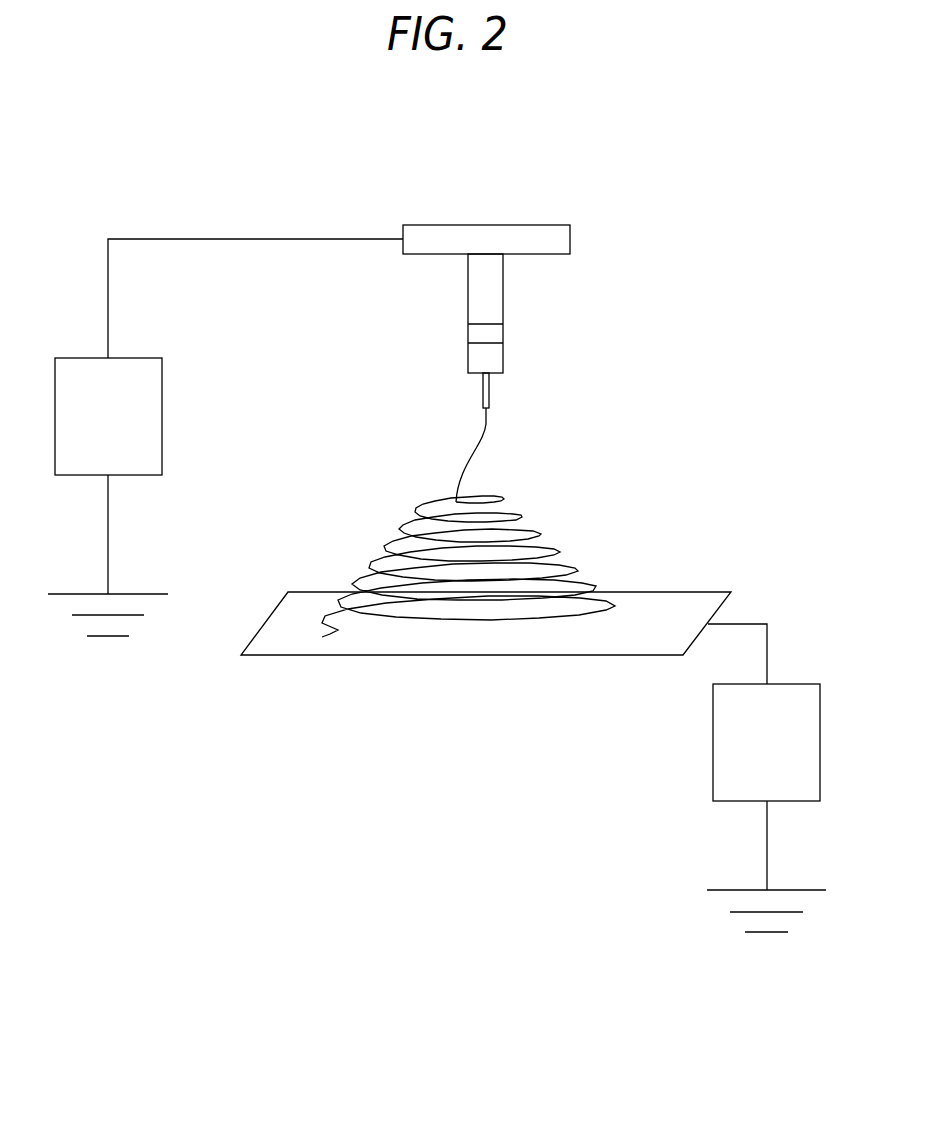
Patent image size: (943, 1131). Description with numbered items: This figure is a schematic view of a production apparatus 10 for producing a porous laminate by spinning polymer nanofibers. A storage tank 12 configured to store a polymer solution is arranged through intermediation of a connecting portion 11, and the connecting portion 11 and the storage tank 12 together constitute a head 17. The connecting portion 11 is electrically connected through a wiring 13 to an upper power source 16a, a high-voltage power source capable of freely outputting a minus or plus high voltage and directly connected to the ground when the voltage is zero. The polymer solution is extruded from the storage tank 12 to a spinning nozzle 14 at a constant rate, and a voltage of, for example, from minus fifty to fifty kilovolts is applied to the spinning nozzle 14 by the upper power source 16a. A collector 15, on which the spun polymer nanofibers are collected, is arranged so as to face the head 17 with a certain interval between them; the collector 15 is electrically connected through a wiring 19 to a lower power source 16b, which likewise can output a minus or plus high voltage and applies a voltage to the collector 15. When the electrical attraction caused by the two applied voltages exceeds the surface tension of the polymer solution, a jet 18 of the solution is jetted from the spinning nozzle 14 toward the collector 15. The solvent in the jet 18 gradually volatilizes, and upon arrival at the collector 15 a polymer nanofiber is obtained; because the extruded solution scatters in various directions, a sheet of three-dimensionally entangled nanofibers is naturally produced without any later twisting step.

The production apparatus 10 is at (440, 705).
The connecting portion 11 is at (570, 238).
The storage tank 12 is at (505, 307).
The wiring 13 is at (318, 239).
The spinning nozzle 14 is at (483, 393).
The collector 15 is at (708, 592).
The upper power source 16a is at (120, 475).
The lower power source 16b is at (780, 801).
The head 17 is at (745, 202).
The jet 18 is at (488, 430).
The wiring 19 is at (748, 624).